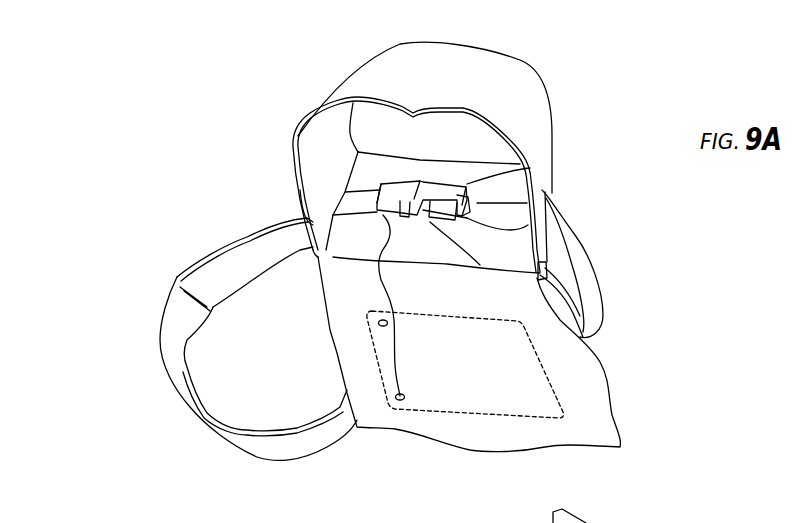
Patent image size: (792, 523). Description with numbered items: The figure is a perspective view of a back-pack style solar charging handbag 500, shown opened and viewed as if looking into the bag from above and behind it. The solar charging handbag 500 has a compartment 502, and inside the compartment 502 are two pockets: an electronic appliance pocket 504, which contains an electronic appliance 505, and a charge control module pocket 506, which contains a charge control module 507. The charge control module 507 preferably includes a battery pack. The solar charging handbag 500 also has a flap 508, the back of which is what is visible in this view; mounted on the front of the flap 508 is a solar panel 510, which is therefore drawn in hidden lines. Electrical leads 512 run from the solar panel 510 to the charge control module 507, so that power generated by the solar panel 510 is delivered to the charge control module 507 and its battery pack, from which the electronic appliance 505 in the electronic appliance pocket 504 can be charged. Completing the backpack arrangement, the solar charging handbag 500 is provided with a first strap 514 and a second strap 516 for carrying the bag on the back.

The solar charging handbag 500 is at (567, 110).
The compartment 502 is at (318, 102).
The electronic appliance pocket 504 is at (537, 170).
The electronic appliance 505 is at (540, 278).
The charge control module pocket 506 is at (381, 185).
The charge control module 507 is at (287, 223).
The flap 508 is at (608, 388).
The solar panel 510 is at (507, 418).
The electrical leads 512 is at (375, 272).
The first strap 514 is at (163, 317).
The second strap 516 is at (588, 250).